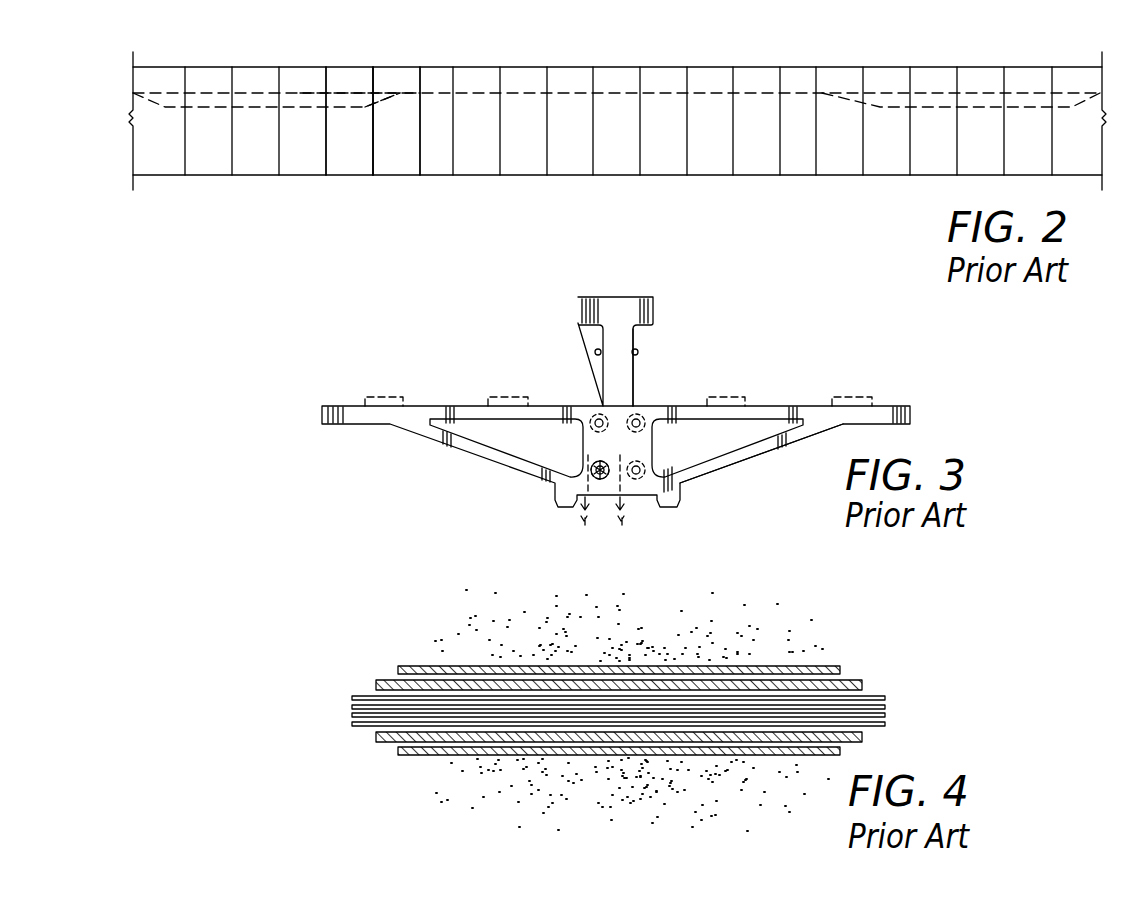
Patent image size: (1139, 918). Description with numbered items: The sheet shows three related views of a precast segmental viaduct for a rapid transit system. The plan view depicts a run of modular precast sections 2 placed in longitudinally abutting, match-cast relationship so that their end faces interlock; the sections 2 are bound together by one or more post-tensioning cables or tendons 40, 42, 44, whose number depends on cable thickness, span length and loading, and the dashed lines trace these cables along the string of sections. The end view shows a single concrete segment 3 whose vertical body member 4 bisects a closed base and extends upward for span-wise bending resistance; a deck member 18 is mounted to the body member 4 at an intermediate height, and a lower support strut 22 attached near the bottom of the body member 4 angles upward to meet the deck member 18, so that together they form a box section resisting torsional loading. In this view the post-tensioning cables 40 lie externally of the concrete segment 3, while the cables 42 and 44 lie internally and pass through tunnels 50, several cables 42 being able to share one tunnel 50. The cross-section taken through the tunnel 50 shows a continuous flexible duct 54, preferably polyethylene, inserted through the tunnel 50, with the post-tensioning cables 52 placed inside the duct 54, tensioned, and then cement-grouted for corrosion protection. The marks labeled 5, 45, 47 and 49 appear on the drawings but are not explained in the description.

In FIG. 2, the precast section 2 is at (200, 73).
In FIG. 3, the concrete segment 3 is at (721, 483).
In FIG. 4, the concrete segment 3 is at (525, 640).
In FIG. 3, the body member 4 is at (583, 305).
In FIG. 3, the fastener location 5 is at (635, 411).
In FIG. 3, the deck member 18 is at (757, 405).
In FIG. 3, the lower support strut 22 is at (468, 448).
In FIG. 2, the post-tensioning cable 40 is at (710, 93).
In FIG. 3, the post-tensioning cable 40 is at (640, 355).
In FIG. 2, the post-tensioning cable 42 is at (357, 94).
In FIG. 3, the post-tensioning cable 42 is at (590, 465).
In FIG. 2, the post-tensioning cable 44 is at (258, 109).
In FIG. 3, the post-tensioning cable 44 is at (645, 468).
In FIG. 2, the layer transition 45 is at (398, 106).
In FIG. 2, the rib 47 is at (350, 167).
In FIG. 2, the rib 49 is at (390, 167).
In FIG. 3, the tunnel 50 is at (602, 479).
In FIG. 4, the tunnel 50 is at (398, 676).
In FIG. 4, the post-tensioning cable 52 is at (372, 728).
In FIG. 4, the continuous flexible duct 54 is at (847, 683).